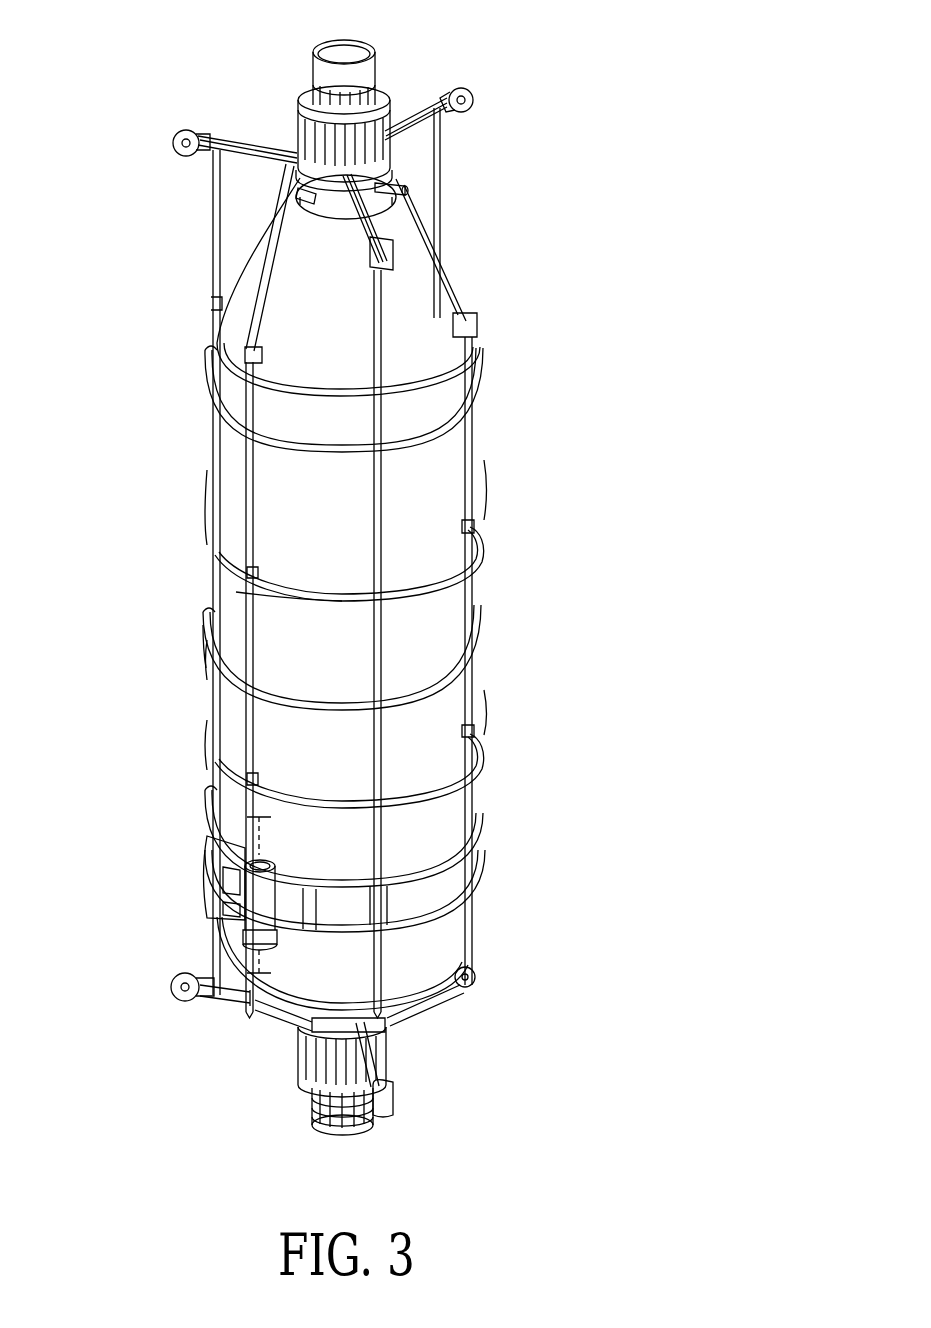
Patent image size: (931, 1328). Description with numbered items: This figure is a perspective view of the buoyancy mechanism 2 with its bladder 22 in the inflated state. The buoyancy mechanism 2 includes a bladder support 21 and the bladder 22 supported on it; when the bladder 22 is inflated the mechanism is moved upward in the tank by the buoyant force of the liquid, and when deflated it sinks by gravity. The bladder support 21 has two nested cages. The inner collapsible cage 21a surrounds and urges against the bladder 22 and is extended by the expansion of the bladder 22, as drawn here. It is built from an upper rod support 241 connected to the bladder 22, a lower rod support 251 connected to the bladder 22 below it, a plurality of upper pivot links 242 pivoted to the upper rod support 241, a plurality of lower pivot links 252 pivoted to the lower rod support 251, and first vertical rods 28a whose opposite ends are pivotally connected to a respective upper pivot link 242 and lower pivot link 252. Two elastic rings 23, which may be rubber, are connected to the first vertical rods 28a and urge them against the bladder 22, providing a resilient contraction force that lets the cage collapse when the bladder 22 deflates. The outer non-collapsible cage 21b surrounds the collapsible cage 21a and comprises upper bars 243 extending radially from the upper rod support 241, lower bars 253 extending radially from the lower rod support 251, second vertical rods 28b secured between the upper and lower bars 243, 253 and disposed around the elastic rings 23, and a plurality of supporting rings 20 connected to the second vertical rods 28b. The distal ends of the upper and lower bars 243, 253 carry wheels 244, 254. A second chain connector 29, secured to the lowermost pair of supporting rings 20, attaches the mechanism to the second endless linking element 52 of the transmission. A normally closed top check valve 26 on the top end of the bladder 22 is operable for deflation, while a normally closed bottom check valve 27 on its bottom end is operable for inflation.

The buoyancy mechanism 2 is at (544, 75).
The supporting ring 20 is at (482, 368).
The bladder support 21 is at (123, 664).
The collapsible cage 21a is at (240, 593).
The non-collapsible cage 21b is at (198, 653).
The bladder 22 is at (432, 820).
The elastic ring 23 is at (475, 528).
The top check valve 26 is at (312, 138).
The bottom check valve 27 is at (308, 1070).
The first vertical rod 28a is at (469, 445).
The second vertical rod 28b is at (377, 513).
The second chain connector 29 is at (204, 886).
The second endless linking element 52 is at (230, 823).
The upper rod support 241 is at (373, 180).
The upper pivot link 242 is at (430, 248).
The upper bar 243 is at (410, 118).
The wheel 244 is at (458, 90).
The lower rod support 251 is at (370, 1033).
The lower pivot link 252 is at (282, 1012).
The lower bar 253 is at (228, 1002).
The wheel 254 is at (183, 980).